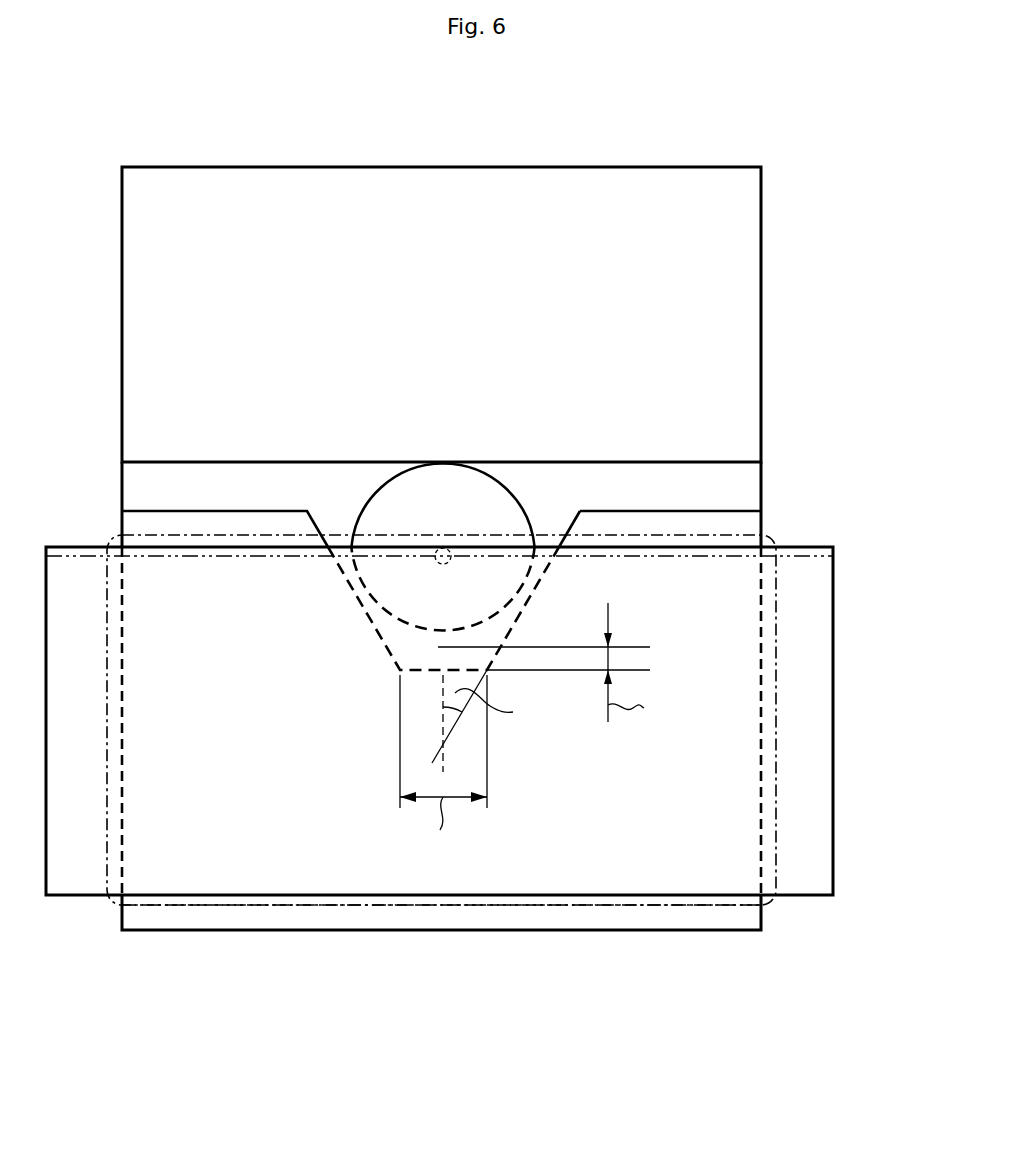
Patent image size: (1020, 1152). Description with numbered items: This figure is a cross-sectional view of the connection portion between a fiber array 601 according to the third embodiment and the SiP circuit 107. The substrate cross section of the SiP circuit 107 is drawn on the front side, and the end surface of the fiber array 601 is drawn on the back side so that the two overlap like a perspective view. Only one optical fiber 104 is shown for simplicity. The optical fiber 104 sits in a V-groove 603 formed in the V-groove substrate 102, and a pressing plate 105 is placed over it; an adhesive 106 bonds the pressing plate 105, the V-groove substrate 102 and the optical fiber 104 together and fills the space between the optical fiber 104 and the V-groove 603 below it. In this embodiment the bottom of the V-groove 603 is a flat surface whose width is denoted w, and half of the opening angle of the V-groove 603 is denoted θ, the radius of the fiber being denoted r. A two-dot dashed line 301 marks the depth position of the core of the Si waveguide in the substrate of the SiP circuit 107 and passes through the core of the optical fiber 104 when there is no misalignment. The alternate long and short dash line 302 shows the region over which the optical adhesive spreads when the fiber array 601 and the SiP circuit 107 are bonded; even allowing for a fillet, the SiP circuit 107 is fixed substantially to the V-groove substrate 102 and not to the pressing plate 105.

The fiber array 601 is at (703, 143).
The pressing plate 105 is at (750, 345).
The adhesive 106 is at (750, 488).
The optical fiber 104 is at (495, 497).
The V-groove 603 is at (386, 657).
The SiP circuit 107 is at (837, 762).
The V-groove substrate 102 is at (440, 932).
The two-dot dashed line 301 is at (795, 556).
The optical adhesive region 302 is at (775, 707).